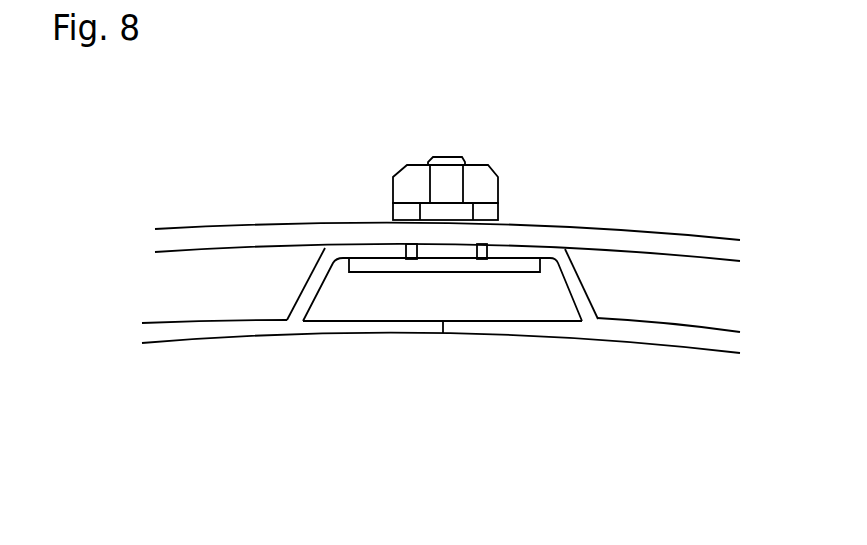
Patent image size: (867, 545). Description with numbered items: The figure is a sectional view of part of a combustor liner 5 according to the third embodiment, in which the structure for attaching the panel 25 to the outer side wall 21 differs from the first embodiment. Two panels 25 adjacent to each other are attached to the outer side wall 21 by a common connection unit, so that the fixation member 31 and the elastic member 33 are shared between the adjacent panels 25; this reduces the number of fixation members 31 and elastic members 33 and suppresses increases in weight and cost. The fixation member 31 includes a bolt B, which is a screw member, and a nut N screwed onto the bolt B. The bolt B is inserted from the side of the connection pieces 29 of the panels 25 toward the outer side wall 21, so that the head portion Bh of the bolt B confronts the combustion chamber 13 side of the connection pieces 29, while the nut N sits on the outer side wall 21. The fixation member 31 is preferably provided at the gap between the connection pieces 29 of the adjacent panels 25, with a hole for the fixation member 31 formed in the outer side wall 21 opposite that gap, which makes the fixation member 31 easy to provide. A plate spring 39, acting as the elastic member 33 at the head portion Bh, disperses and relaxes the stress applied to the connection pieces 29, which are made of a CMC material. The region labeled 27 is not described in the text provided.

The combustor liner 5 is at (338, 93).
The combustion chamber 13 is at (458, 523).
The outer side wall 21 is at (580, 222).
The panel 25 is at (183, 335).
The panel bottom portion 27 is at (340, 335).
The connection piece 29 is at (312, 280).
The fixation member 31 is at (487, 160).
The bolt B is at (467, 158).
The nut N is at (499, 183).
The elastic member 33 is at (444, 342).
The plate spring 39 is at (518, 274).
The head portion Bh is at (432, 274).